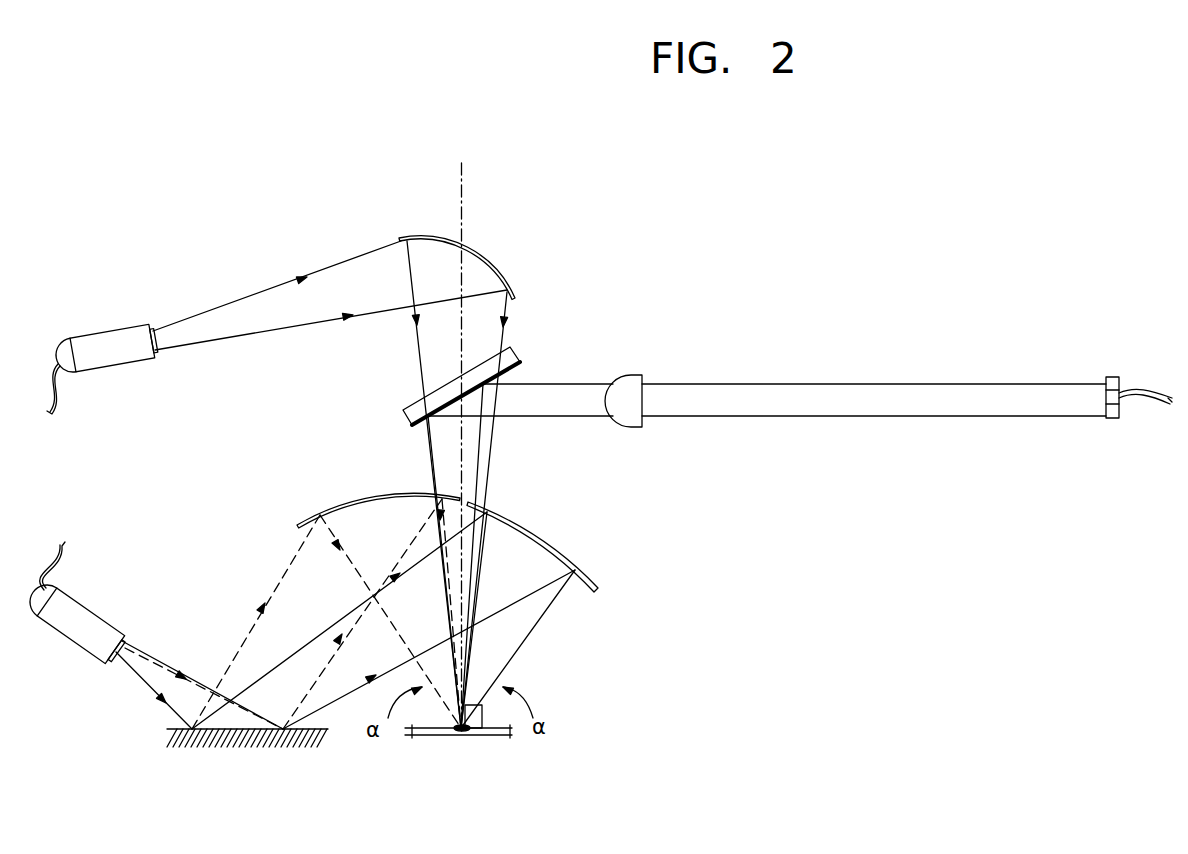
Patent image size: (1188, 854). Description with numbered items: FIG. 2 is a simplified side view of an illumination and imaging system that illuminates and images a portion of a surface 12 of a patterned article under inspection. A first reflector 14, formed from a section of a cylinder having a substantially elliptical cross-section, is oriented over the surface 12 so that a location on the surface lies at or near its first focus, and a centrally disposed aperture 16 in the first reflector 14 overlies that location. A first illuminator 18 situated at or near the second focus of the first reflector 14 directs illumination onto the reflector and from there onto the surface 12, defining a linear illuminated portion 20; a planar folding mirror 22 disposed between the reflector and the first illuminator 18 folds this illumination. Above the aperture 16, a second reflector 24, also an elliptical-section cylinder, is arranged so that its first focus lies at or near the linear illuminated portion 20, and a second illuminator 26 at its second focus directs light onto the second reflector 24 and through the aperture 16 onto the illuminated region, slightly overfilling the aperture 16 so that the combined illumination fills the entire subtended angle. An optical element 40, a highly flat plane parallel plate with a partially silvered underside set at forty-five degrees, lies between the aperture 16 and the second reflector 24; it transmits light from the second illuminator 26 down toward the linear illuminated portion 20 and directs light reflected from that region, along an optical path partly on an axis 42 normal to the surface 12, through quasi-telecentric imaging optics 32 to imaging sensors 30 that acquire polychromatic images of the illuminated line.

The surface 12 is at (495, 738).
The first reflector 14 is at (557, 535).
The aperture 16 is at (480, 492).
The first illuminator 18 is at (90, 610).
The linear illuminated portion 20 is at (468, 735).
The planar folding mirror 22 is at (200, 733).
The second reflector 24 is at (497, 278).
The second illuminator 26 is at (112, 343).
The imaging sensors 30 is at (1108, 378).
The quasi-telecentric imaging optics 32 is at (630, 420).
The optical element 40 is at (411, 409).
The axis 42 is at (458, 190).